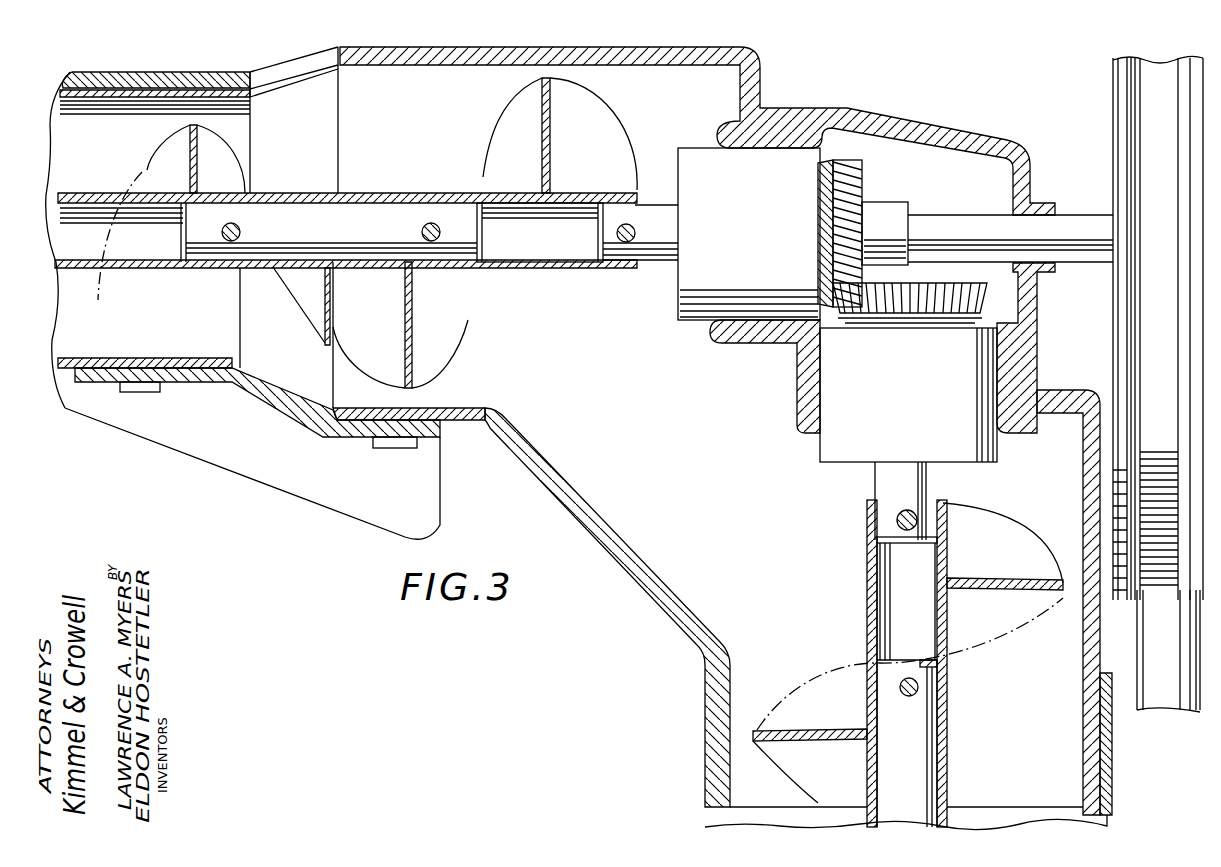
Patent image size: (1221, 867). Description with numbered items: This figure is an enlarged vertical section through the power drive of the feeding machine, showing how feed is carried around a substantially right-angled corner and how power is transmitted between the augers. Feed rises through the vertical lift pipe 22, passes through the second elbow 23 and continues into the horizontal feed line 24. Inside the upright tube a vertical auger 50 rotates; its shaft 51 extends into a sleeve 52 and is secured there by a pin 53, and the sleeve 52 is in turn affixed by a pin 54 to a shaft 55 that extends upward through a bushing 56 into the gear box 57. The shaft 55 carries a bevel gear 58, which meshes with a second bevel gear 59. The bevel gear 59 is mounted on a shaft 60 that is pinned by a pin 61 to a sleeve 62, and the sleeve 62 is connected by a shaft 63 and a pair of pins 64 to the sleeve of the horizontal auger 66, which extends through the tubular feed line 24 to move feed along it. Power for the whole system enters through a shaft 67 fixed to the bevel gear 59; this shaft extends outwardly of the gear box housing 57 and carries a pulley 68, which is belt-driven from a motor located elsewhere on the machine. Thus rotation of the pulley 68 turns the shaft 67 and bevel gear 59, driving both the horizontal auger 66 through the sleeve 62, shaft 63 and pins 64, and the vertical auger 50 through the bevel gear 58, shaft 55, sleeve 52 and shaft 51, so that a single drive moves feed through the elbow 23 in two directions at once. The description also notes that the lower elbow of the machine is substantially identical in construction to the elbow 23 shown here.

The vertical lift pipe 22 is at (704, 800).
The second elbow 23 is at (606, 533).
The horizontal feed line 24 is at (105, 383).
The vertical auger 50 is at (813, 657).
The shaft 51 is at (927, 767).
The sleeve 52 is at (873, 584).
The pin 53 is at (918, 692).
The pin 54 is at (897, 520).
The shaft 55 is at (928, 484).
The bushing 56 is at (840, 440).
The gear box 57 is at (1014, 147).
The bevel gear 58 is at (972, 303).
The second bevel gear 59 is at (861, 186).
The shaft 60 is at (650, 205).
The pin 61 is at (626, 243).
The sleeve 62 is at (530, 266).
The shaft 63 is at (353, 216).
The pair of pins 64 is at (238, 224).
The horizontal auger 66 is at (108, 306).
The shaft 67 is at (964, 222).
The pulley 68 is at (1187, 580).